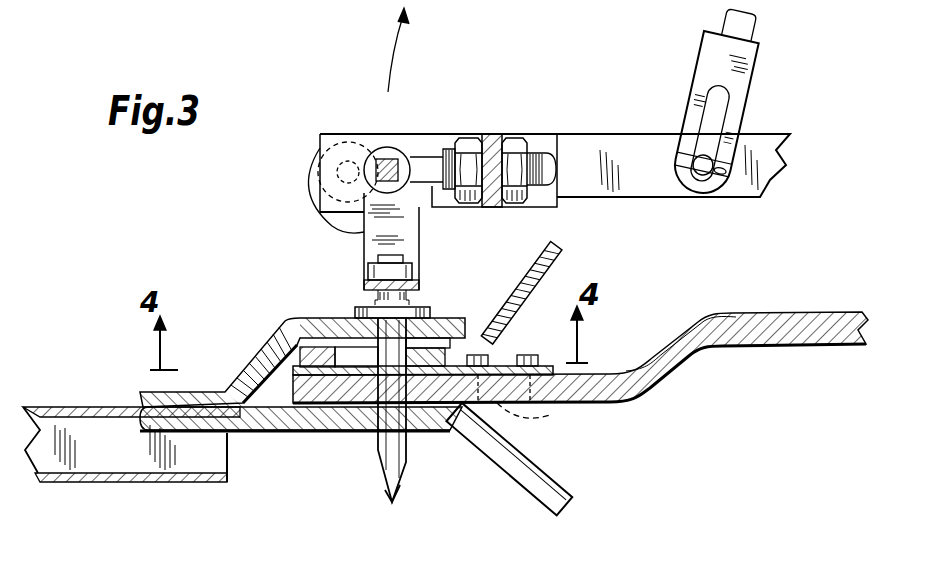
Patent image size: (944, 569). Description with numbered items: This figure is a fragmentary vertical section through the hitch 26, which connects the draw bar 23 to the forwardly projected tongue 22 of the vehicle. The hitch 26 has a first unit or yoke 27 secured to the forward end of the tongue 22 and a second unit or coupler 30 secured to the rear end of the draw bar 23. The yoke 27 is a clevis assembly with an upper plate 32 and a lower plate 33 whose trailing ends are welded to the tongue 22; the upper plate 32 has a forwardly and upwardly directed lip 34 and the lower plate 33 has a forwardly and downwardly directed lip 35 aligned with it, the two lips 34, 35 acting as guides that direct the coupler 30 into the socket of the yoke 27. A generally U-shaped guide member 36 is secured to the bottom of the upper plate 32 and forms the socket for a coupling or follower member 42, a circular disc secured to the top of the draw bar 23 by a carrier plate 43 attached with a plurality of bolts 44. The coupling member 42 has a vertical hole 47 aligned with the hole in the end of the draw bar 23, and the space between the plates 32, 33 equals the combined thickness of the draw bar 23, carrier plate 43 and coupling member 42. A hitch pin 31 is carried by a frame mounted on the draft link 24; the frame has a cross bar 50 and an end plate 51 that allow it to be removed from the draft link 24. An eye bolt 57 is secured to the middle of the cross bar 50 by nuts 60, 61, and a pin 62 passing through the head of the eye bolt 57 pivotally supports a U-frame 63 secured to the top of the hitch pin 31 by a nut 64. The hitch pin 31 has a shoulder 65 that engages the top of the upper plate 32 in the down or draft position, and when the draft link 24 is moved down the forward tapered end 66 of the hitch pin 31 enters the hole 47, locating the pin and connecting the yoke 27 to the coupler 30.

The tongue 22 is at (102, 481).
The draw bar 23 is at (815, 346).
The draft link 24 is at (636, 142).
The hitch 26 is at (270, 286).
The yoke 27 is at (262, 440).
The coupler 30 is at (530, 320).
The hitch pin 31 is at (388, 455).
The upper plate 32 is at (262, 355).
The lower plate 33 is at (297, 433).
The lip 34 is at (559, 249).
The lip 35 is at (548, 500).
The guide member 36 is at (317, 345).
The coupling member 42 is at (451, 335).
The plate 43 is at (293, 376).
The bolts 44 is at (536, 420).
The vertical hole 47 is at (322, 128).
The cross bar 50 is at (493, 136).
The end plate 51 is at (433, 141).
The eye bolt 57 is at (433, 199).
The nut 60 is at (471, 140).
The nut 61 is at (517, 143).
The pin 62 is at (392, 163).
The U-frame 63 is at (419, 239).
The nut 64 is at (370, 272).
The shoulder 65 is at (358, 309).
The tapered end 66 is at (394, 493).